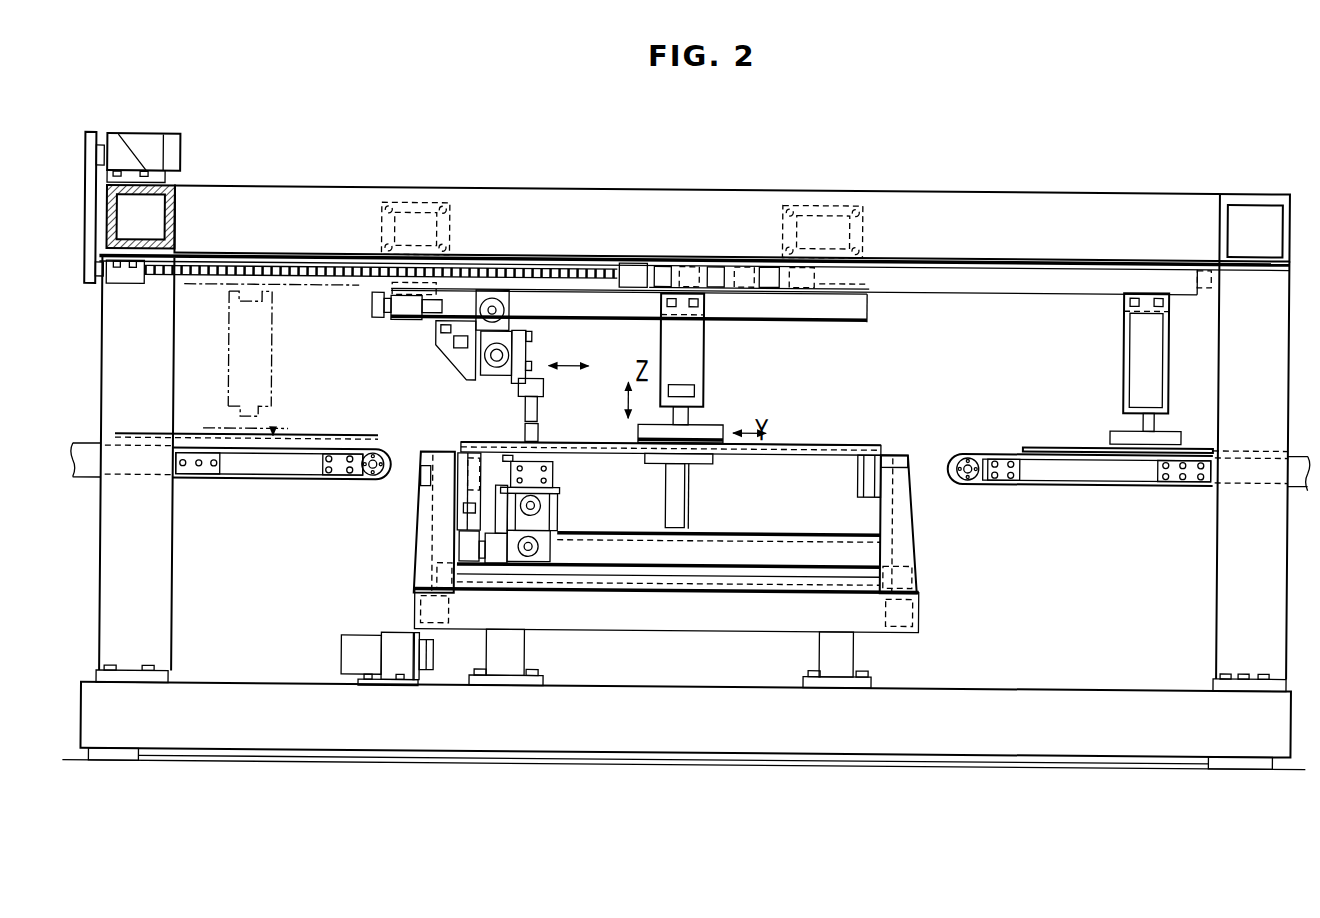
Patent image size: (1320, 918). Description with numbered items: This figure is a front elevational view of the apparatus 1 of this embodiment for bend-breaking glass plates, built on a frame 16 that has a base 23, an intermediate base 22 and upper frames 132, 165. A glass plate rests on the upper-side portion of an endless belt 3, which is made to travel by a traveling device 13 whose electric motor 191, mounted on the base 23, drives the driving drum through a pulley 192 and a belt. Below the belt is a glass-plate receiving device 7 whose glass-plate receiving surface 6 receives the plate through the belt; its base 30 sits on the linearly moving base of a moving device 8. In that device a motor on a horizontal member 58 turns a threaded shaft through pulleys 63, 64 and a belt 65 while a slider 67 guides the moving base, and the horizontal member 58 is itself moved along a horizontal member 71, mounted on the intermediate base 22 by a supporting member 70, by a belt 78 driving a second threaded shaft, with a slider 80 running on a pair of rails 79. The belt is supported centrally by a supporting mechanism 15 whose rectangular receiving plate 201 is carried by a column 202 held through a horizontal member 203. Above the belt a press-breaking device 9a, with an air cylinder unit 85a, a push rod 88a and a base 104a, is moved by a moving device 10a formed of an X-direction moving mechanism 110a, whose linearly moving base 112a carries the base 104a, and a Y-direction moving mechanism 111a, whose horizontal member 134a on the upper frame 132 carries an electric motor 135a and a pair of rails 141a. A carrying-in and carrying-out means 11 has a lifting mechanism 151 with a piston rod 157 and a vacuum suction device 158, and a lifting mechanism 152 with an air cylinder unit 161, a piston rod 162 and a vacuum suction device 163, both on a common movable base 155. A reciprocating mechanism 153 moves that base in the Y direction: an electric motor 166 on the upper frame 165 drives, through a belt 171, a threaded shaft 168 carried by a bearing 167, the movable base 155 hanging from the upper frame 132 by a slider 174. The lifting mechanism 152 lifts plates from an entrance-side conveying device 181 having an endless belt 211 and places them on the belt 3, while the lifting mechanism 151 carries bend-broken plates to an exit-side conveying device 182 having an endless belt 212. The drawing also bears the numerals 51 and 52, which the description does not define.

The substrate processing apparatus 1 is at (1243, 163).
The endless belt 3 is at (850, 440).
The glass-plate receiving surface 6 is at (548, 460).
The glass-plate receiving device 7 is at (568, 480).
The moving device 8 is at (566, 556).
The press-breaking device 9a is at (588, 361).
The moving device 10a is at (388, 320).
The carrying-in and carrying-out means 11 is at (710, 343).
The traveling device 13 is at (343, 645).
The supporting mechanism 15 is at (702, 482).
The frame 16 is at (1082, 182).
The intermediate base 22 is at (722, 626).
The base 23 is at (1046, 702).
The base 30 is at (520, 456).
The holder unit (retracted position) 51 is at (233, 335).
The post top 52 is at (885, 452).
The horizontal member 58 is at (560, 502).
The pulley 63 is at (510, 458).
The pulley 64 is at (531, 553).
The belt 65 is at (505, 558).
The slider 67 is at (468, 507).
The supporting member 70 is at (703, 580).
The horizontal member 71 is at (671, 572).
The belt 78 is at (470, 545).
The pair of rails 79 is at (696, 522).
The slider 80 is at (600, 528).
The air cylinder unit 85a is at (545, 405).
The push rod 88a is at (543, 430).
The base 104a is at (523, 383).
The X-direction moving mechanism 110a is at (516, 297).
The Y-direction moving mechanism 111a is at (368, 302).
The X-direction linearly moving base 112a is at (538, 340).
The upper frame 132 is at (694, 203).
The horizontal member 134a is at (845, 290).
The electric motor 135a is at (406, 302).
The pair of rails 141a is at (800, 290).
The lifting mechanism 151 is at (708, 383).
The lifting mechanism 152 is at (1118, 348).
The reciprocating mechanism 153 is at (148, 128).
The movable base 155 is at (947, 287).
The piston rod 157 is at (690, 420).
The vacuum suction device 158 is at (716, 432).
The air cylinder unit 161 is at (1135, 373).
The piston rod 162 is at (1146, 415).
The vacuum suction device 163 is at (1112, 430).
The upper frame 165 is at (178, 205).
The electric motor 166 is at (150, 150).
The bearing 167 is at (127, 284).
The threaded shaft 168 is at (333, 262).
The belt 171 is at (85, 240).
The slider 174 is at (630, 261).
The conveying device 181 is at (1078, 482).
The conveying device 182 is at (250, 482).
The electric motor 191 is at (365, 640).
The pulley 192 is at (438, 650).
The receiving plate 201 is at (652, 452).
The column 202 is at (690, 470).
The horizontal member 203 is at (786, 529).
The endless belt 211 is at (1128, 480).
The endless belt 212 is at (297, 480).